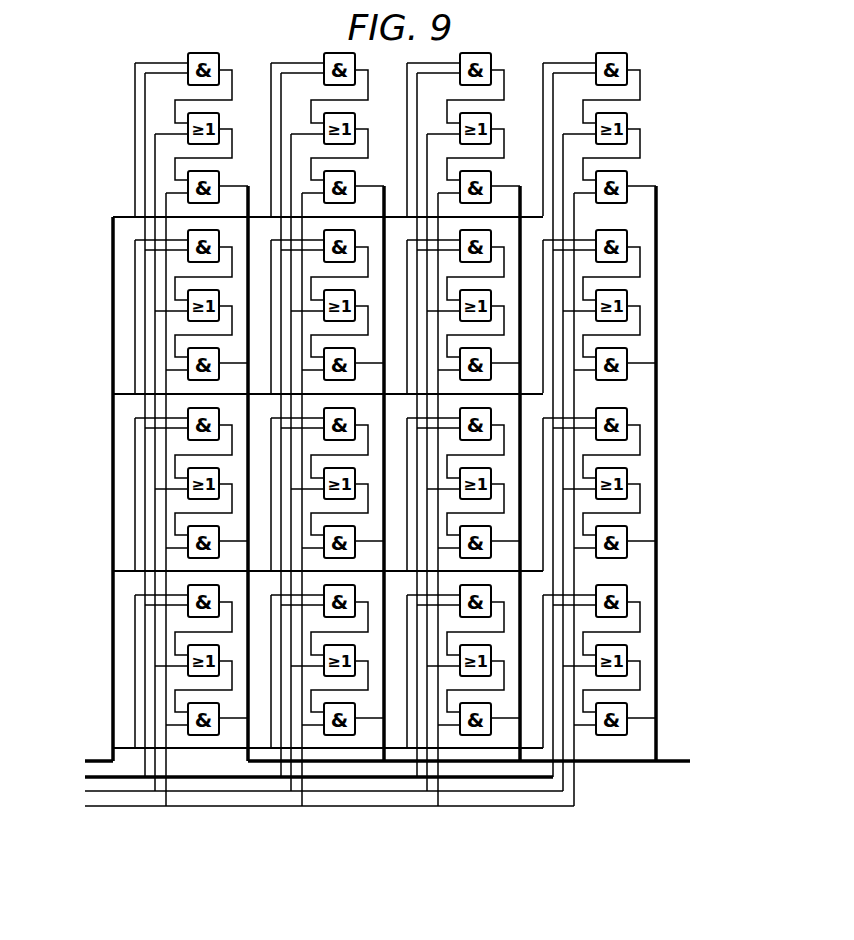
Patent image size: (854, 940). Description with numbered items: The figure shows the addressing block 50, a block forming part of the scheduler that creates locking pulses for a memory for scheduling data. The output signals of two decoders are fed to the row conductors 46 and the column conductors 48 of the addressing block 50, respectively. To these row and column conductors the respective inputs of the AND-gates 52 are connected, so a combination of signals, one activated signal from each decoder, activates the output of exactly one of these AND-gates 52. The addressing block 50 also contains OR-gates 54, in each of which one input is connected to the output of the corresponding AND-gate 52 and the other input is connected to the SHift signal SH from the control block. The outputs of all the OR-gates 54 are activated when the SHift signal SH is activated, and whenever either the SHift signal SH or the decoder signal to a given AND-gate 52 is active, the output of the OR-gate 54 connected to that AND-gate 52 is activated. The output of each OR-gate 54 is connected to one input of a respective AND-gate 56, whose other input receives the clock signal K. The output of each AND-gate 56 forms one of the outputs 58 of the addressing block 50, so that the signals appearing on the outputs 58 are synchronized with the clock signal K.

The addressing block 50 is at (662, 88).
The row conductors 46 is at (118, 215).
The column conductors 48 is at (145, 733).
The AND-gate 52 is at (219, 58).
The OR-gate 54 is at (219, 118).
The AND-gate 56 is at (219, 173).
The outputs of the addressing block 58 is at (617, 764).
The SHift signal SH is at (97, 791).
The clock signal K is at (97, 806).